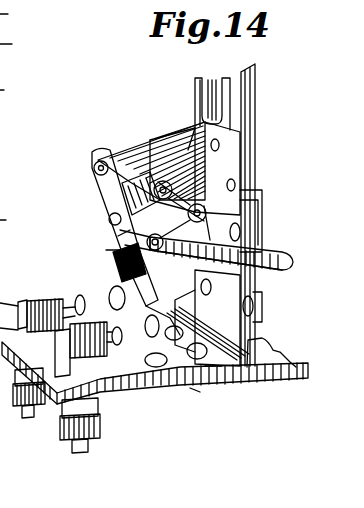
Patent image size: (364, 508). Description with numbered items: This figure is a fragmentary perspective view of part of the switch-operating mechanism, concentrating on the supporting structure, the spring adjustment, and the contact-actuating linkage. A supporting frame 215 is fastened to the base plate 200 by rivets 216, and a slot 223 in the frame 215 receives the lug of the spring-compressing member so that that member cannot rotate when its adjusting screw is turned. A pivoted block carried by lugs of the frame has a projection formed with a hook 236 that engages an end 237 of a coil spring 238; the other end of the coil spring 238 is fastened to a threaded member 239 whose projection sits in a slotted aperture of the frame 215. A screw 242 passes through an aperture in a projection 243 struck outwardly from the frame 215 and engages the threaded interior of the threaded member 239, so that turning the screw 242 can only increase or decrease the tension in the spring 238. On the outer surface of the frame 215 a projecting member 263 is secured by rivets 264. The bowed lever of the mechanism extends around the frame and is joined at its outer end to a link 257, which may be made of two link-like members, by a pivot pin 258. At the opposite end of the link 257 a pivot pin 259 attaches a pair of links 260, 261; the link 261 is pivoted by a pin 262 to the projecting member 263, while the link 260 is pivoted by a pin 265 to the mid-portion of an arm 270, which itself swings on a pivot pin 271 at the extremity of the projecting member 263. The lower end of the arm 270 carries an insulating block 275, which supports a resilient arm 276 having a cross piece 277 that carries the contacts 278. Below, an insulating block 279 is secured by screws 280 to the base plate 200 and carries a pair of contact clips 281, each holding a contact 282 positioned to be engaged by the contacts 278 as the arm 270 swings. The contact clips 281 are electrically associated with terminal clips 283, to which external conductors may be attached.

The base plate 200 is at (274, 386).
The supporting frame 215 is at (250, 98).
The rivets 216 is at (206, 386).
The slot 223 is at (204, 78).
The hook 236 is at (9, 323).
The end of coil spring 237 is at (9, 299).
The coil spring 238 is at (0, 236).
The threaded member 239 is at (10, 91).
The screw 242 is at (14, 7).
The projection 243 is at (0, 46).
The link 257 is at (256, 240).
The pivot pin 258 is at (140, 262).
The pivot pin 259 is at (150, 196).
The link 260 is at (128, 165).
The link 261 is at (190, 124).
The pin 262 is at (238, 216).
The projecting member 263 is at (178, 130).
The rivets 264 is at (219, 145).
The pin 265 is at (105, 217).
The arm 270 is at (98, 192).
The pivot pin 271 is at (96, 150).
The insulating block 275 is at (120, 244).
The resilient arm 276 is at (160, 252).
The cross piece 277 is at (150, 306).
The contacts 278 is at (108, 290).
The insulating block 279 is at (190, 398).
The screws 280 is at (180, 394).
The contact clips 281 is at (44, 284).
The contact 282 is at (106, 252).
The terminal clips 283 is at (30, 410).